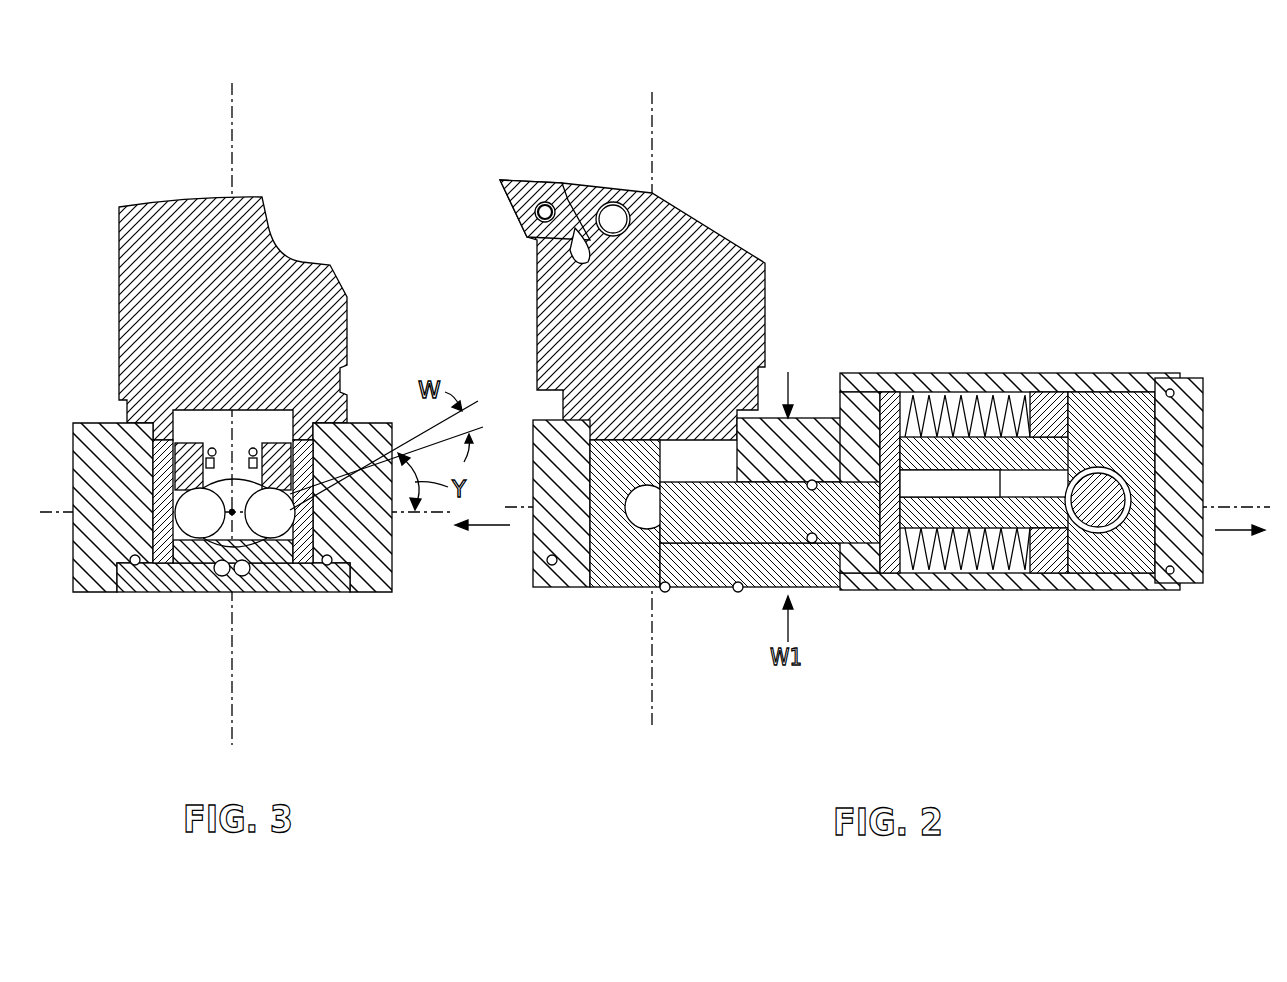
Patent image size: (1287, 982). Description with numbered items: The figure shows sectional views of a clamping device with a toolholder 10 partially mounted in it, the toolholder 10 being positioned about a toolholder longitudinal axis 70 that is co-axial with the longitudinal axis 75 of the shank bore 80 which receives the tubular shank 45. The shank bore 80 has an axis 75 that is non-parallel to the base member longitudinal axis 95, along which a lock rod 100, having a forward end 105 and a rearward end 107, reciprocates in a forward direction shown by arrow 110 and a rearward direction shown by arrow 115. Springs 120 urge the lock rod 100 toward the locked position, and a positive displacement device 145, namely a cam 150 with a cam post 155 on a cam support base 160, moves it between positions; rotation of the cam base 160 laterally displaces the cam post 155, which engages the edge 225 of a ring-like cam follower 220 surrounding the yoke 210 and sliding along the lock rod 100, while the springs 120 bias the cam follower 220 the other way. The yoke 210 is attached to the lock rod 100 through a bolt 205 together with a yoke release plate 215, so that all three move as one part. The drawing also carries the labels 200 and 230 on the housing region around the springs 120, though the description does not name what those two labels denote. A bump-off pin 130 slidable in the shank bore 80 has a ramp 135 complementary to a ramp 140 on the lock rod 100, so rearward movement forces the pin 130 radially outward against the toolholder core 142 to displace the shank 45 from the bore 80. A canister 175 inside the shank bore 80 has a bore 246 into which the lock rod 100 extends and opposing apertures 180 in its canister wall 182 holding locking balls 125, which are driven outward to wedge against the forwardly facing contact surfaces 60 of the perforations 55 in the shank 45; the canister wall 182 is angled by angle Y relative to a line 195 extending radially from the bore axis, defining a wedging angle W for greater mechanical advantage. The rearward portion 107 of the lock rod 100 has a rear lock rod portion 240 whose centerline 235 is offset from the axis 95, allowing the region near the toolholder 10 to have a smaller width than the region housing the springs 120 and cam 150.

In FIG. 3, the toolholder 10 is at (270, 227).
In FIG. 2, the toolholder 10 is at (768, 275).
In FIG. 2, the tubular shank 45 is at (570, 440).
In FIG. 3, the perforations 55 is at (120, 325).
In FIG. 3, the forwardly facing concave contact surfaces 60 is at (183, 527).
In FIG. 2, the toolholder longitudinal axis 70 is at (652, 101).
In FIG. 3, the shank bore axis 75 is at (233, 722).
In FIG. 2, the shank bore axis 75 is at (652, 143).
In FIG. 2, the shank bore 80 is at (583, 422).
In FIG. 3, the base member longitudinal axis 95 is at (180, 505).
In FIG. 2, the base member longitudinal axis 95 is at (1212, 592).
In FIG. 2, the lock rod 100 is at (830, 372).
In FIG. 2, the forward end of lock rod 105 is at (648, 592).
In FIG. 2, the rearward end of lock rod 107 is at (940, 592).
In FIG. 3, the forward direction arrow 110 is at (496, 528).
In FIG. 2, the rearward direction arrow 115 is at (1236, 585).
In FIG. 2, the springs 120 is at (980, 385).
In FIG. 3, the locking balls 125 is at (160, 570).
In FIG. 2, the locking balls 125 is at (612, 592).
In FIG. 3, the bump-off pin 130 is at (290, 395).
In FIG. 2, the bump-off pin 130 is at (712, 335).
In FIG. 2, the ramp of bump-off pin 135 is at (572, 483).
In FIG. 2, the complementary ramp of lock rod 140 is at (793, 480).
In FIG. 3, the toolholder core 142 is at (245, 415).
In FIG. 2, the toolholder core 142 is at (610, 410).
In FIG. 2, the positive displacement device 145 is at (955, 628).
In FIG. 2, the cam 150 is at (1123, 390).
In FIG. 2, the cam post 155 is at (1108, 388).
In FIG. 2, the cam support base 160 is at (1105, 592).
In FIG. 3, the canister 175 is at (180, 455).
In FIG. 2, the canister 175 is at (572, 594).
In FIG. 3, the canister apertures 180 is at (140, 455).
In FIG. 3, the canister wall 182 is at (150, 470).
In FIG. 3, the radial line 195 is at (52, 515).
In FIG. 2, the spring seat 200 is at (955, 380).
In FIG. 2, the bolt 205 is at (897, 592).
In FIG. 2, the yoke 210 is at (1090, 592).
In FIG. 2, the yoke release plate 215 is at (1148, 390).
In FIG. 2, the cam follower 220 is at (1037, 387).
In FIG. 2, the edge of cam follower 225 is at (1068, 592).
In FIG. 2, the bearing seat 230 is at (945, 382).
In FIG. 2, the rear portion centerline 235 is at (1220, 520).
In FIG. 2, the rear lock rod portion 240 is at (1135, 592).
In FIG. 2, the canister bore 246 is at (716, 592).